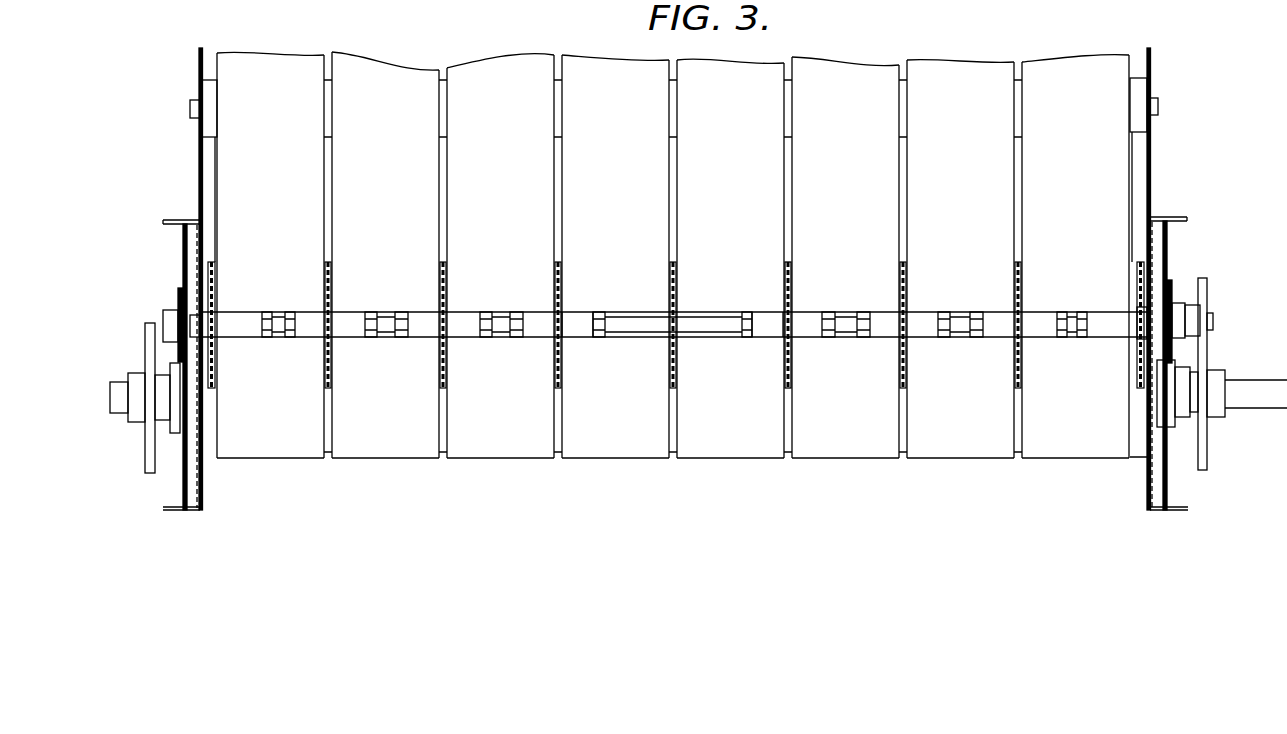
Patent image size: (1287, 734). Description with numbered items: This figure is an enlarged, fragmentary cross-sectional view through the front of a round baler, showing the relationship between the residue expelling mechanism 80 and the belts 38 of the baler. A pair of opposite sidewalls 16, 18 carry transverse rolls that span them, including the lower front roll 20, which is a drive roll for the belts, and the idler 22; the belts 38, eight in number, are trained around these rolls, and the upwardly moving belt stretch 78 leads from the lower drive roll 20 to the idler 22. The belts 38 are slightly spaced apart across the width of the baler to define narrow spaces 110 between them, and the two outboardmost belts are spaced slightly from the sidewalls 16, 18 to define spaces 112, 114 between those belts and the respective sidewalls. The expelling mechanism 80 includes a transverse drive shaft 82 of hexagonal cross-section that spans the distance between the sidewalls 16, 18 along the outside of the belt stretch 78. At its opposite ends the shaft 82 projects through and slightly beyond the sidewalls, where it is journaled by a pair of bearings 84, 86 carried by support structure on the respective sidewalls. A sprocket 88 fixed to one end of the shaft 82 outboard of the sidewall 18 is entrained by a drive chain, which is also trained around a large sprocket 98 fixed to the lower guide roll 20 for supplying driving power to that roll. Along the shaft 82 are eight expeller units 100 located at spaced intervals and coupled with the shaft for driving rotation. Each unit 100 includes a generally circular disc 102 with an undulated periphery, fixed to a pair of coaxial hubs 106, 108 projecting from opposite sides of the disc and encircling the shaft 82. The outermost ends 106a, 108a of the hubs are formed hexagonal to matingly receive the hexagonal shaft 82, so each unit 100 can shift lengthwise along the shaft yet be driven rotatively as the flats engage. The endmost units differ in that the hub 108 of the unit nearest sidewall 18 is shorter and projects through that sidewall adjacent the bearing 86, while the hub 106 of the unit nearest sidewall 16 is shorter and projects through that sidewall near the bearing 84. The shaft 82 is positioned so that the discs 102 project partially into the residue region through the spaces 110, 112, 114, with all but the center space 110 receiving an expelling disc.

The sidewall 16 is at (200, 72).
The sidewall 18 is at (1150, 62).
The lower front roll 20 is at (673, 415).
The idler 22 is at (1143, 128).
The belts 38 is at (860, 55).
The belt stretch 78 is at (1115, 178).
The residue expelling mechanism 80 is at (762, 296).
The drive shaft 82 is at (621, 326).
The bearing 84 is at (182, 303).
The bearing 86 is at (1171, 296).
The sprocket 88 is at (1207, 303).
The large sprocket 98 is at (1207, 434).
The expeller units 100 is at (1130, 268).
The disc 102 is at (793, 362).
The hub 106 is at (1118, 315).
The hexagonal end 106a is at (740, 326).
The hub 108 is at (1138, 320).
The hexagonal end 108a is at (834, 328).
The narrow spaces 110 is at (1065, 175).
The space 112 is at (210, 178).
The space 114 is at (1140, 211).